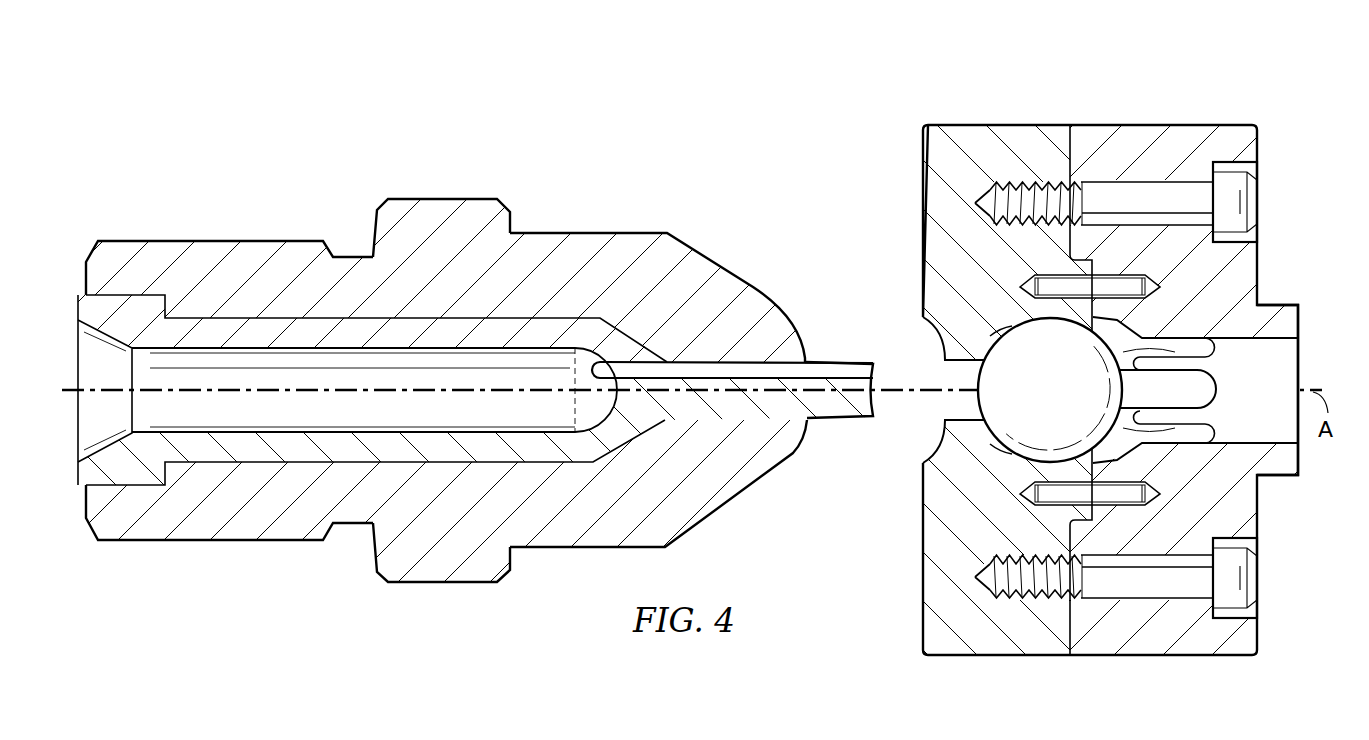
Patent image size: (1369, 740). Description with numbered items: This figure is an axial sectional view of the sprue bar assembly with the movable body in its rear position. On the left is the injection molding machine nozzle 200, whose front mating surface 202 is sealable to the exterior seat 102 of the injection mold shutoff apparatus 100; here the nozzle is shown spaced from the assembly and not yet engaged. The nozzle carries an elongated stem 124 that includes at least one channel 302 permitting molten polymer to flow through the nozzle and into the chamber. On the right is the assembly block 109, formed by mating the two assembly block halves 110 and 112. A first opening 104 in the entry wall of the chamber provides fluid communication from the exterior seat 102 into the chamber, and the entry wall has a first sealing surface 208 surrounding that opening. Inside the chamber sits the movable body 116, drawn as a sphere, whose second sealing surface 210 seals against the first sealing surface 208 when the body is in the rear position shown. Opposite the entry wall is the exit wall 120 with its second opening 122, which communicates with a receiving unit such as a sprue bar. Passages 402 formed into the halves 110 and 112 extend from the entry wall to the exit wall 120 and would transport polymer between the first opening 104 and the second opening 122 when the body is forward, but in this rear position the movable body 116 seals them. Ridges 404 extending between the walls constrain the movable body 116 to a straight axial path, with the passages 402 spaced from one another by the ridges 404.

The injection mold shutoff apparatus 100 is at (614, 134).
The exterior seat 102 is at (924, 334).
The first opening 104 is at (923, 418).
The assembly block 109 is at (1110, 339).
The assembly block half 110 is at (962, 125).
The assembly block half 112 is at (1184, 365).
The movable body 116 is at (1047, 421).
The exit wall 120 is at (1135, 327).
The second opening 122 is at (1297, 351).
The elongated stem 124 is at (838, 365).
The injection molding machine nozzle 200 is at (437, 199).
The front mating surface 202 is at (798, 452).
The first sealing surface 208 is at (1002, 340).
The second sealing surface 210 is at (1008, 457).
The channel 302 is at (771, 376).
The passages 402 is at (1200, 350).
The ridges 404 is at (1112, 382).